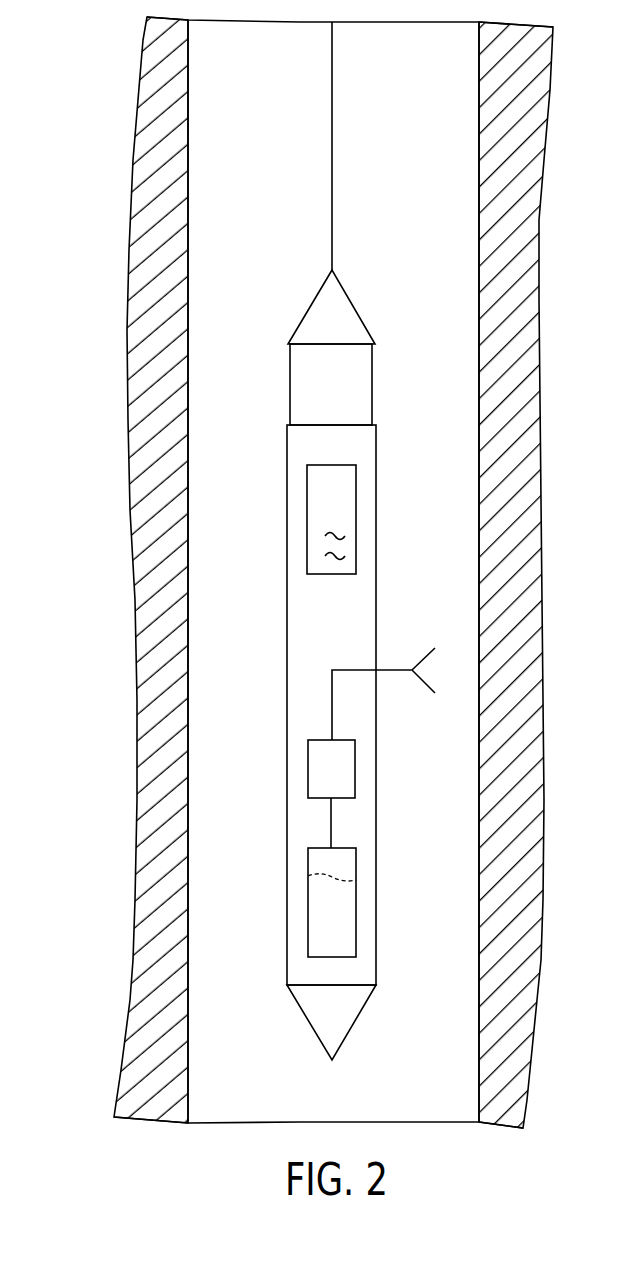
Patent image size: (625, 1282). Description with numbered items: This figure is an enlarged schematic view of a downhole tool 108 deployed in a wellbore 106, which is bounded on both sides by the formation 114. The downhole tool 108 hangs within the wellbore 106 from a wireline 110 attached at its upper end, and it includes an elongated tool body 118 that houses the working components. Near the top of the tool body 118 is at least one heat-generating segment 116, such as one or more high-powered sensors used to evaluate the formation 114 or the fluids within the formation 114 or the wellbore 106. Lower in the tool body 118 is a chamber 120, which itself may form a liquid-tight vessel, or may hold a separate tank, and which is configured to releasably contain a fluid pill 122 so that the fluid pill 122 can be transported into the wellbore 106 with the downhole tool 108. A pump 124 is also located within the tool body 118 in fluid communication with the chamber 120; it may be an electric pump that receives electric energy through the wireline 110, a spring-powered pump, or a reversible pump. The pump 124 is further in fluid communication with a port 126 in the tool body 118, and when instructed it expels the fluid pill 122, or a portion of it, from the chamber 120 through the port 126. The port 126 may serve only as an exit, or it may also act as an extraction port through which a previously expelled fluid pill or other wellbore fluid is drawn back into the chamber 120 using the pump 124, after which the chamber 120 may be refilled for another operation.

The wellbore 106 is at (479, 318).
The downhole tool 108 is at (331, 636).
The wireline 110 is at (333, 133).
The formation 114 is at (112, 560).
The heat-generating segment 116 is at (357, 520).
The tool body 118 is at (300, 628).
The chamber 120 is at (308, 895).
The fluid pill 122 is at (347, 941).
The pump 124 is at (347, 786).
The port 126 is at (375, 672).